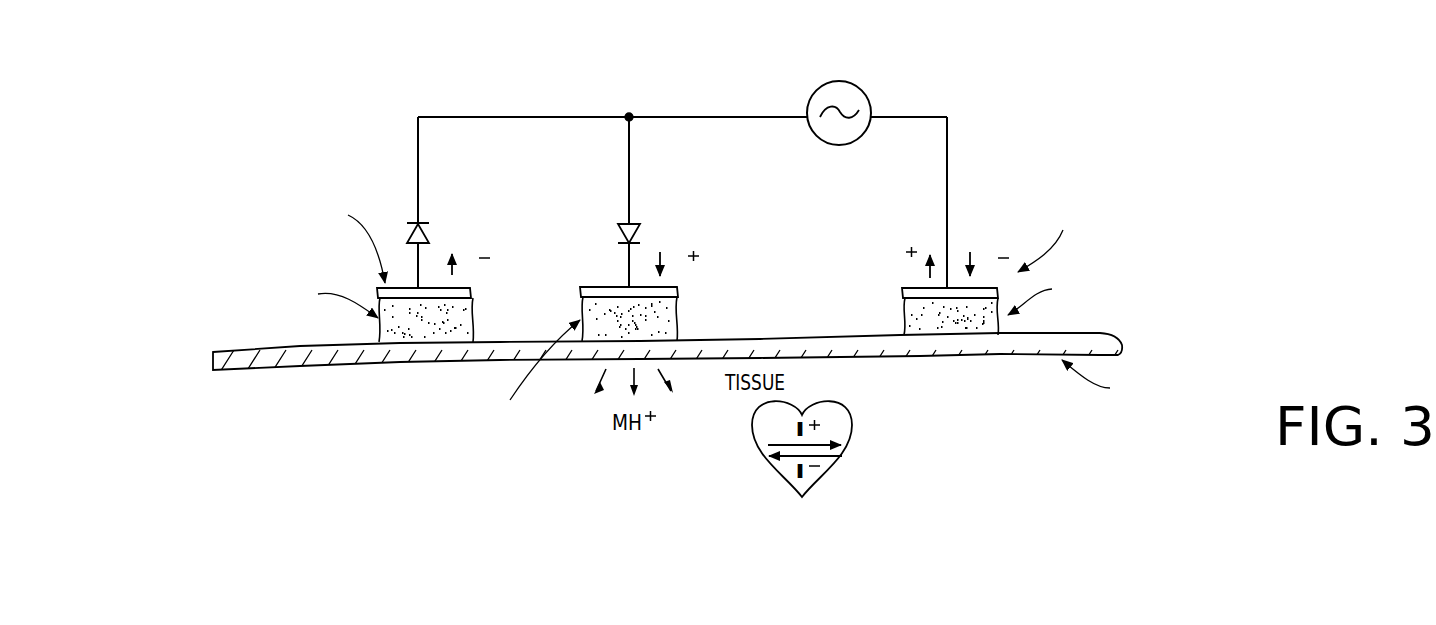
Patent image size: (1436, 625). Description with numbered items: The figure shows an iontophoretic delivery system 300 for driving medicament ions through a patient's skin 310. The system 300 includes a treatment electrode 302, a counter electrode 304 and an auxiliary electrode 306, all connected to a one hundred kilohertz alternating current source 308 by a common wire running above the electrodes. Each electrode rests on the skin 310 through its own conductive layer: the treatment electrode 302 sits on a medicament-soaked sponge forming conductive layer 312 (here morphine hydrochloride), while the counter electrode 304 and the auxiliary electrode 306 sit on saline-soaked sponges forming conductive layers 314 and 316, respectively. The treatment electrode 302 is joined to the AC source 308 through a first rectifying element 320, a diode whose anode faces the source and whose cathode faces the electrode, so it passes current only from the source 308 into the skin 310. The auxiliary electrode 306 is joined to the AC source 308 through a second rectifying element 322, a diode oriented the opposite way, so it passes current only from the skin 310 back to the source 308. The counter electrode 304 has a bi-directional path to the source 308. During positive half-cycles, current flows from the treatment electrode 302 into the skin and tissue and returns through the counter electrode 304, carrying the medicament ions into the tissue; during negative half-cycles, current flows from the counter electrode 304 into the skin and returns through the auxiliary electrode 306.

The iontophoretic delivery system 300 is at (316, 130).
The treatment electrode 302 is at (603, 285).
The counter electrode 304 is at (900, 290).
The auxiliary electrode 306 is at (377, 290).
The alternating current source 308 is at (825, 144).
The skin 310 is at (915, 342).
The conductive layer 312 is at (680, 290).
The conductive layer 314 is at (904, 315).
The conductive layer 316 is at (474, 318).
The first rectifying element 320 is at (631, 222).
The second rectifying element 322 is at (411, 223).